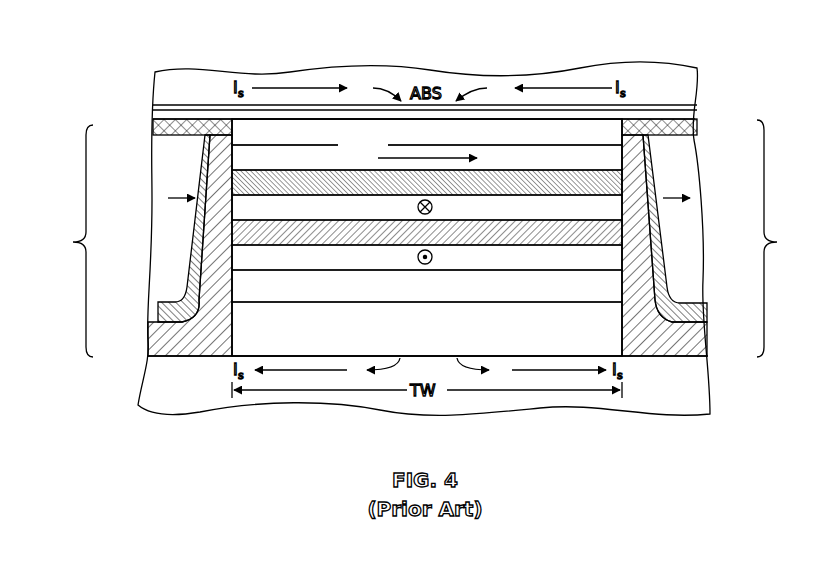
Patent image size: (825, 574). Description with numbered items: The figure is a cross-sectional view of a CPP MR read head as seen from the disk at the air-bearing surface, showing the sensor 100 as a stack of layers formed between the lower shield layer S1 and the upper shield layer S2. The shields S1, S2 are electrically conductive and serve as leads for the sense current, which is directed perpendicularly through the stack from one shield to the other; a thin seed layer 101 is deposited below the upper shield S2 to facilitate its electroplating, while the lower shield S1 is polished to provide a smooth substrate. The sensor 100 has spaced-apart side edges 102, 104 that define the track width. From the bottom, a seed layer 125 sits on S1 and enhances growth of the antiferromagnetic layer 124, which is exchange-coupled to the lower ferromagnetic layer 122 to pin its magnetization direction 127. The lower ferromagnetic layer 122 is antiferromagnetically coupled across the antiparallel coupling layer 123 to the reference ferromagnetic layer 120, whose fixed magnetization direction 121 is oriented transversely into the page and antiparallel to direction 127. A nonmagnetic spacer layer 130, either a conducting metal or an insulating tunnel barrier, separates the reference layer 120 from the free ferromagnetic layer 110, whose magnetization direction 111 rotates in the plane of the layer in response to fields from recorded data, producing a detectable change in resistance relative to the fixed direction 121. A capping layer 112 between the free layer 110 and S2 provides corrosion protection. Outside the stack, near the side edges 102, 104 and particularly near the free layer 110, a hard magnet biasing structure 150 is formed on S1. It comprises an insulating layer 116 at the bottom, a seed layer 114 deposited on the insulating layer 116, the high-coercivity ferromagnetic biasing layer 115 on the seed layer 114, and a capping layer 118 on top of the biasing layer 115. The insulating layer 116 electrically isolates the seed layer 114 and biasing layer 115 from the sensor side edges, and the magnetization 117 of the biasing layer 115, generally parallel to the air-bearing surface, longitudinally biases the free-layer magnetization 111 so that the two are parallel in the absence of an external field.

The sensor 100 is at (307, 122).
The seed layer 101 is at (631, 113).
The side edge 102 is at (228, 348).
The side edge 104 is at (628, 348).
The free ferromagnetic layer 110 is at (571, 165).
The magnetization direction 111 is at (391, 156).
The capping layer 112 is at (571, 140).
The seed layer 114 is at (162, 312).
The ferromagnetic biasing layer 115 is at (160, 248).
The insulating layer 116 is at (163, 342).
The magnetization 117 is at (176, 198).
The capping layer 118 is at (157, 130).
The reference ferromagnetic layer 120 is at (571, 215).
The magnetization direction 121 is at (432, 207).
The lower ferromagnetic layer 122 is at (571, 265).
The AP coupling layer 123 is at (571, 240).
The antiferromagnetic layer 124 is at (571, 292).
The seed layer 125 is at (571, 338).
The magnetization direction 127 is at (432, 257).
The nonmagnetic spacer layer 130 is at (571, 190).
The hard magnet biasing structure 150 is at (424, 238).
The lower shield layer S1 is at (703, 393).
The upper shield layer S2 is at (700, 94).